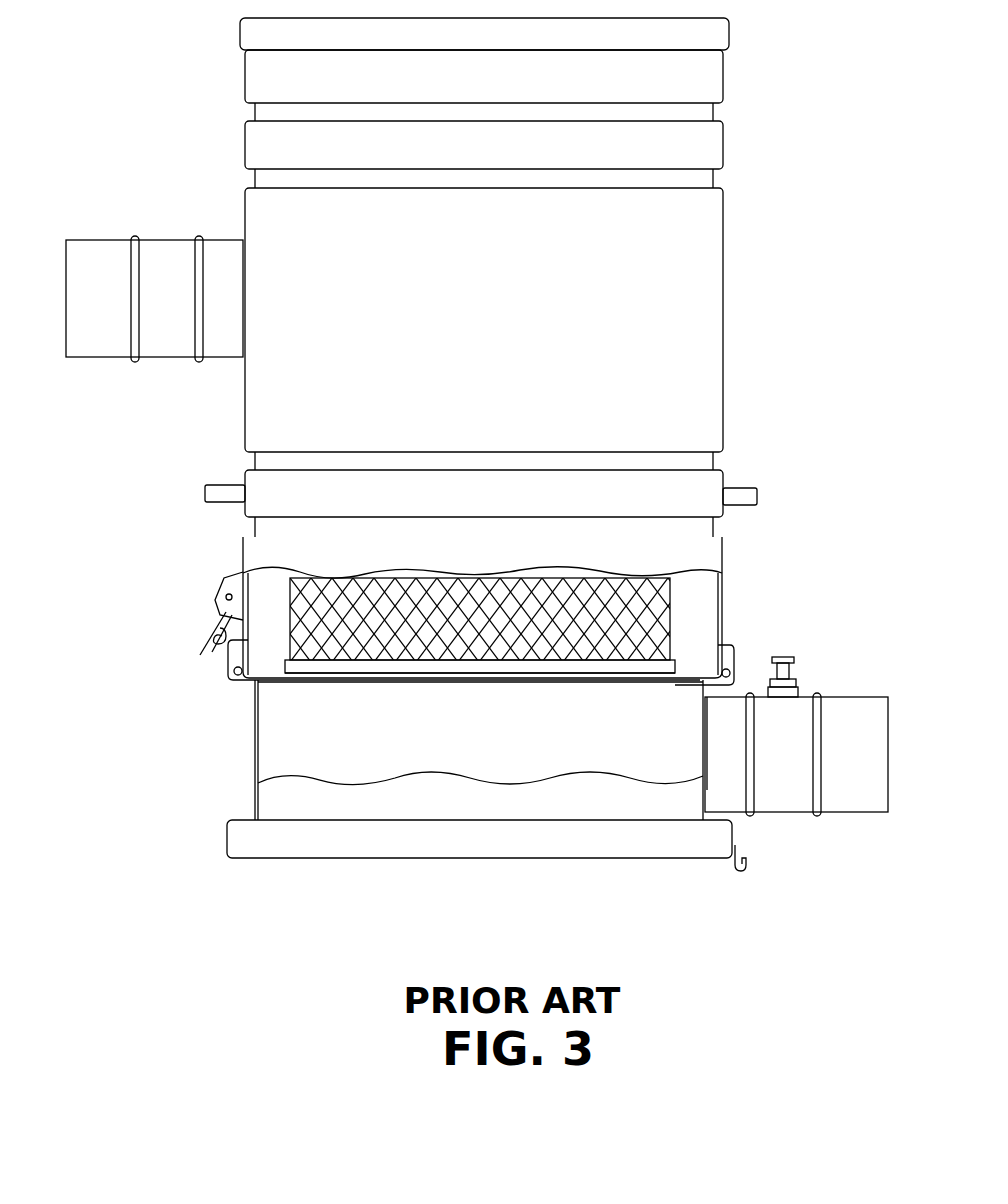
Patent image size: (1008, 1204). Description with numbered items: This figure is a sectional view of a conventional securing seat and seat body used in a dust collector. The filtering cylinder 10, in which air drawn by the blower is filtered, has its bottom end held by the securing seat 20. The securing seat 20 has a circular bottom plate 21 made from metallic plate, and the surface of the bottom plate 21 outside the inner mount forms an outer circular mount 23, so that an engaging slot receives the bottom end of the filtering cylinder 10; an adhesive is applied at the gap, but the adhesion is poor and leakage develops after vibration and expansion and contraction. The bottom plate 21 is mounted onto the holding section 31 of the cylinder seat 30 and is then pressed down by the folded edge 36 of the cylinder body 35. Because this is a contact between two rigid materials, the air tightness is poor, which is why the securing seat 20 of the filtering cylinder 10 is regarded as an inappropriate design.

The filtering cylinder 10 is at (660, 580).
The securing seat 20 is at (563, 692).
The bottom plate 21 is at (318, 680).
The outer circular mount 23 is at (403, 680).
The cylinder seat 30 is at (255, 745).
The holding section 31 is at (228, 660).
The cylinder body 35 is at (722, 571).
The folded edge 36 is at (735, 660).